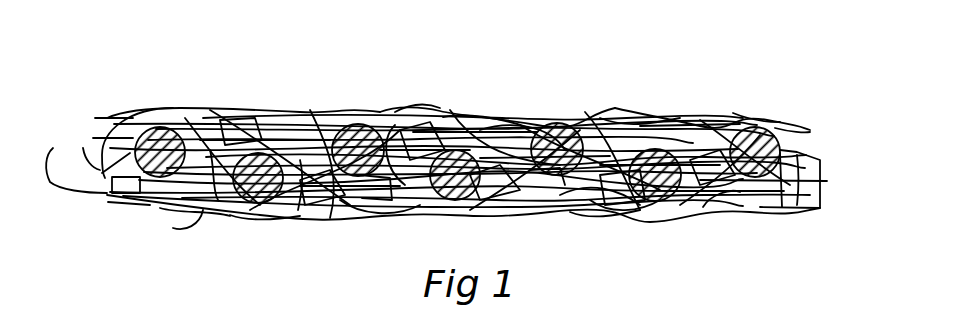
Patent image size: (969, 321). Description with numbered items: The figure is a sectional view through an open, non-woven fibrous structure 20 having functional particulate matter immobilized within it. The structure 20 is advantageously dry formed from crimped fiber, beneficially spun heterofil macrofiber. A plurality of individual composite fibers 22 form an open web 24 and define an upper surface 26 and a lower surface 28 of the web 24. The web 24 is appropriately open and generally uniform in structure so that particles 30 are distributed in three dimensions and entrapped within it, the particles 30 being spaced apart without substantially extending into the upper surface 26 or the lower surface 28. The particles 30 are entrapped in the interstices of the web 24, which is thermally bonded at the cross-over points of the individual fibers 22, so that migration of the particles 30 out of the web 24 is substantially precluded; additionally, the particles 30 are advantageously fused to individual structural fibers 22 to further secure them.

The fibrous structure 20 is at (306, 78).
The composite fibers 22 is at (665, 118).
The open web 24 is at (806, 152).
The upper surface 26 is at (424, 107).
The lower surface 28 is at (264, 223).
The particles 30 is at (190, 110).